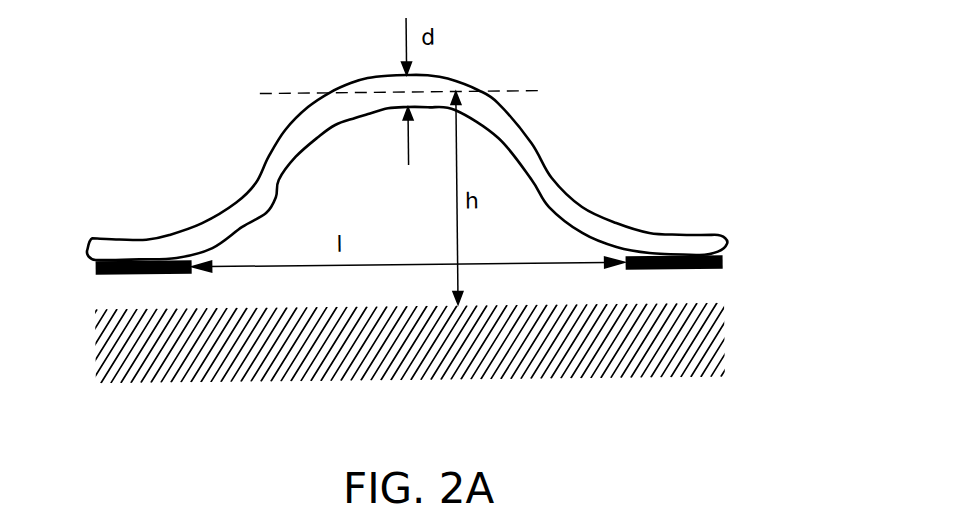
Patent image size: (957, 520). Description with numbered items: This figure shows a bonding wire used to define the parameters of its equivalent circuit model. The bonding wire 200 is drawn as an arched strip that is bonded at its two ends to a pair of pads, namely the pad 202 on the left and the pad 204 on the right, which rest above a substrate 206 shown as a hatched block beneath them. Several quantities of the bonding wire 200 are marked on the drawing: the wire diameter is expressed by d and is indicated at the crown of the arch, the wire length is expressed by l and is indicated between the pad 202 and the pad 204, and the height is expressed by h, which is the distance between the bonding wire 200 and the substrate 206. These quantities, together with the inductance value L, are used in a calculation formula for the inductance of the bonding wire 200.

The bonding wire 200 is at (554, 194).
The pad 202 is at (118, 272).
The pad 204 is at (698, 272).
The substrate 206 is at (682, 373).